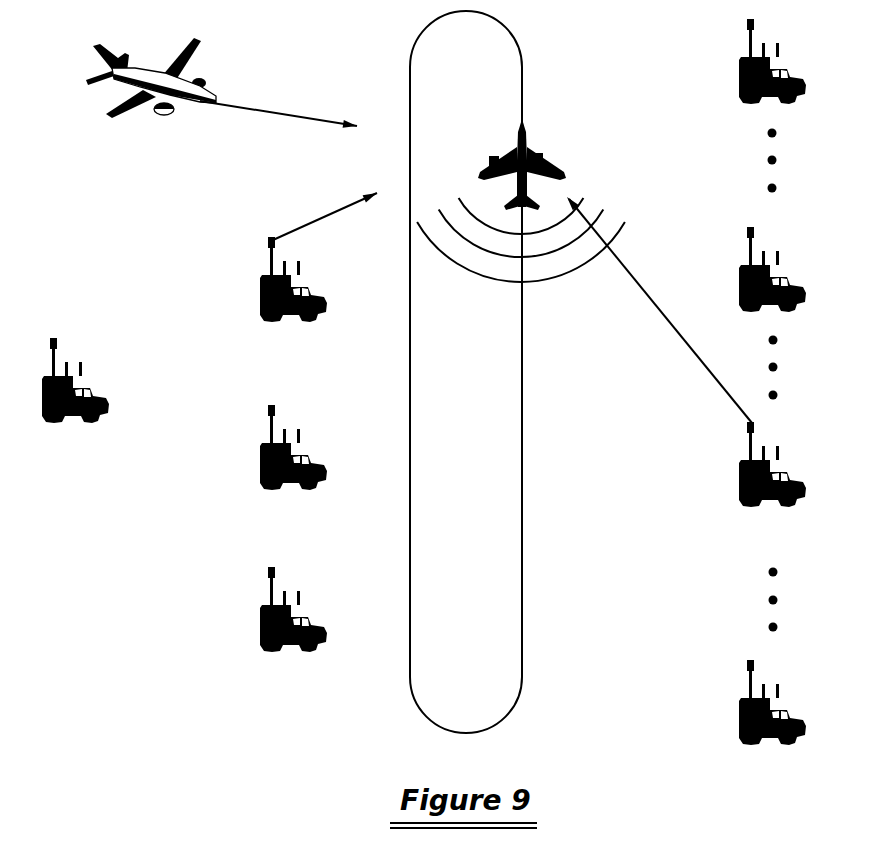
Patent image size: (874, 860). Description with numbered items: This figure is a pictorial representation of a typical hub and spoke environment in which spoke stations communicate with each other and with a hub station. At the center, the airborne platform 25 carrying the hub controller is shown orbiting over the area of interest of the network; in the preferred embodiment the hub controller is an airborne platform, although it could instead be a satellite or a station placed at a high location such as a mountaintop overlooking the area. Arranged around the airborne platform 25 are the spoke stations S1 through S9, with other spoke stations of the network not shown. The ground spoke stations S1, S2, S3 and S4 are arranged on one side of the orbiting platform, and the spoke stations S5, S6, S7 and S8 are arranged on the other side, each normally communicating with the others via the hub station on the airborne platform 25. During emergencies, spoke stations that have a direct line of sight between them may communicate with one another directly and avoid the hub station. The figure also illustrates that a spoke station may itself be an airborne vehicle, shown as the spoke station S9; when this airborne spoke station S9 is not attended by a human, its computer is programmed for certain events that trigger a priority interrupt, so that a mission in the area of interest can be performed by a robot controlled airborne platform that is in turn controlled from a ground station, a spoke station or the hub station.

The airborne platform 25 is at (540, 157).
The spoke station S1 is at (75, 399).
The spoke station S2 is at (318, 257).
The spoke station S3 is at (316, 447).
The spoke station S4 is at (316, 609).
The spoke station S5 is at (795, 61).
The spoke station S6 is at (795, 269).
The spoke station S7 is at (797, 464).
The spoke station S8 is at (797, 702).
The spoke station S9 is at (221, 99).